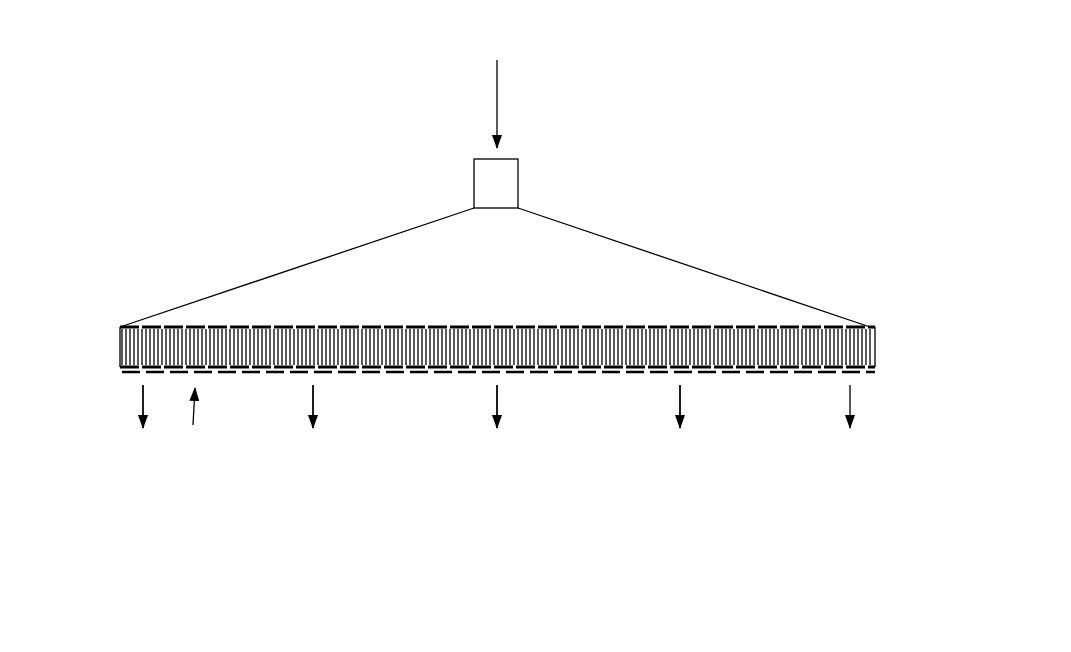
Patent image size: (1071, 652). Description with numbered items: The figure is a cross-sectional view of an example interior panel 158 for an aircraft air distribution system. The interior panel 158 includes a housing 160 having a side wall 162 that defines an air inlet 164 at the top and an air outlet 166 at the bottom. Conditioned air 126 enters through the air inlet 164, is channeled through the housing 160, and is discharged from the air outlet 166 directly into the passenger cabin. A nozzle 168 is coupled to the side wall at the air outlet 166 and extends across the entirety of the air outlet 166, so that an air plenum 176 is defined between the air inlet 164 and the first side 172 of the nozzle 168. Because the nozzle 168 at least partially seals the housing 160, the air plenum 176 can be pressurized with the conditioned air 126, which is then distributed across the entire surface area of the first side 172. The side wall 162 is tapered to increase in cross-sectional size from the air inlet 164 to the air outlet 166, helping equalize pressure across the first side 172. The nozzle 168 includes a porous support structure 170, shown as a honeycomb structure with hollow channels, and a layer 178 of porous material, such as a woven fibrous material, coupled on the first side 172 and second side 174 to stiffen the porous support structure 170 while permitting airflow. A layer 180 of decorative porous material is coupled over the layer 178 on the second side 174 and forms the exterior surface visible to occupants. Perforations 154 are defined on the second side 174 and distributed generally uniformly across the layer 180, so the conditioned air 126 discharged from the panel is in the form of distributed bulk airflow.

The conditioned air 126 is at (497, 96).
The perforations 154 is at (412, 382).
The interior panel 158 is at (703, 82).
The housing 160 is at (705, 250).
The side wall 162 is at (622, 242).
The air inlet 164 is at (537, 150).
The air outlet 166 is at (868, 403).
The nozzle 168 is at (110, 325).
The porous support structure 170 is at (120, 349).
The first side 172 is at (206, 306).
The second side 174 is at (193, 425).
The air plenum 176 is at (512, 278).
The layer of porous material 178 is at (157, 327).
The layer of decorative porous material 180 is at (130, 377).